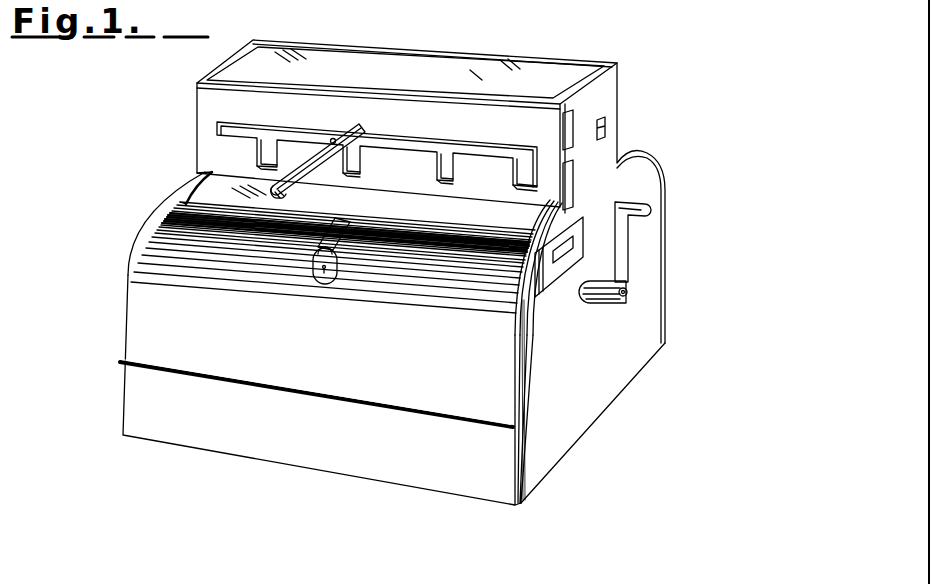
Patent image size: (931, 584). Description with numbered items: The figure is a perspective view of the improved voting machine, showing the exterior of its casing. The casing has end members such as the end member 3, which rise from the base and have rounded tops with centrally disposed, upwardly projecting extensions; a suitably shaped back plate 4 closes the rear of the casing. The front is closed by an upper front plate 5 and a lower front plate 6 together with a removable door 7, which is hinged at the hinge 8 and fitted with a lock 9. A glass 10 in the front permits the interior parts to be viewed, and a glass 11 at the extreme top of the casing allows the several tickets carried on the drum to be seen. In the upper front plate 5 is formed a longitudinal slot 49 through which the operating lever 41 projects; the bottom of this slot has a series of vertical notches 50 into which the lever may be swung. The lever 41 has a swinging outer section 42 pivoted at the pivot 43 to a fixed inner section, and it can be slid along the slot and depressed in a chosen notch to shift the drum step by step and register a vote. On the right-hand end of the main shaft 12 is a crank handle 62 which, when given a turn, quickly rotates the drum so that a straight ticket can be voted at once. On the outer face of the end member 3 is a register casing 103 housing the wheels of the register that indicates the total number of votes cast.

The end member 3 is at (593, 422).
The back plate 4 is at (660, 167).
The upper front plate 5 is at (197, 135).
The lower front plate 6 is at (210, 438).
The removable door 7 is at (345, 338).
The hinge 8 is at (513, 421).
The lock 9 is at (317, 276).
The glass 10 is at (178, 183).
The glass 11 is at (517, 73).
The main shaft 12 is at (630, 292).
The operating lever 41 is at (357, 135).
The swinging outer section 42 is at (303, 185).
The pivot 43 is at (333, 139).
The longitudinal slot 49 is at (248, 127).
The vertical notches 50 is at (260, 157).
The crank handle 62 is at (628, 255).
The register casing 103 is at (548, 291).